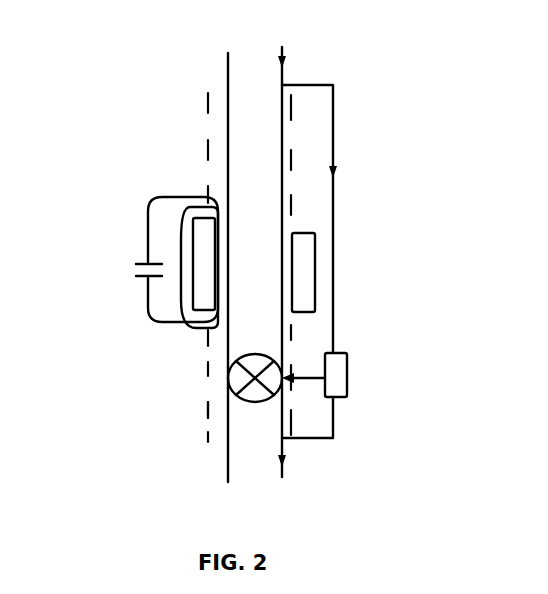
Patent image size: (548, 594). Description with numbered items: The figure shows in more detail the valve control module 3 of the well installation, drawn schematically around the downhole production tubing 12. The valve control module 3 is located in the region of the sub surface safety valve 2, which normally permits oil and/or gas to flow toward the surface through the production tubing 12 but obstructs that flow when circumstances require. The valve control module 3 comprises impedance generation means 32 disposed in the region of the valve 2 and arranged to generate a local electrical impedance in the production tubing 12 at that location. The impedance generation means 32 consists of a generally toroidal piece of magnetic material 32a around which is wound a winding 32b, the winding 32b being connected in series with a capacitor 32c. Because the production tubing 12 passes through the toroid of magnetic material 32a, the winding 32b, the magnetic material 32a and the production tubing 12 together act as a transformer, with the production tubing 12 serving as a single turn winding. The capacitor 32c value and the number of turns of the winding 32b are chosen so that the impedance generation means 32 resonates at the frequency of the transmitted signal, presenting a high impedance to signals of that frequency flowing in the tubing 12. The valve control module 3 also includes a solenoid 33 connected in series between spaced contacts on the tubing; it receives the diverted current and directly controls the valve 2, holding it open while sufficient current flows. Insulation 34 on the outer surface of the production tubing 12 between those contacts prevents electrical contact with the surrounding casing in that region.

The sub surface safety valve 2 is at (244, 398).
The valve control module 3 is at (198, 354).
The production tubing 12 is at (227, 73).
The impedance generation means 32 is at (147, 234).
The toroidal piece of magnetic material 32a is at (207, 280).
The winding 32b is at (200, 323).
The capacitor 32c is at (137, 262).
The solenoid 33 is at (340, 365).
The insulation 34 is at (208, 408).